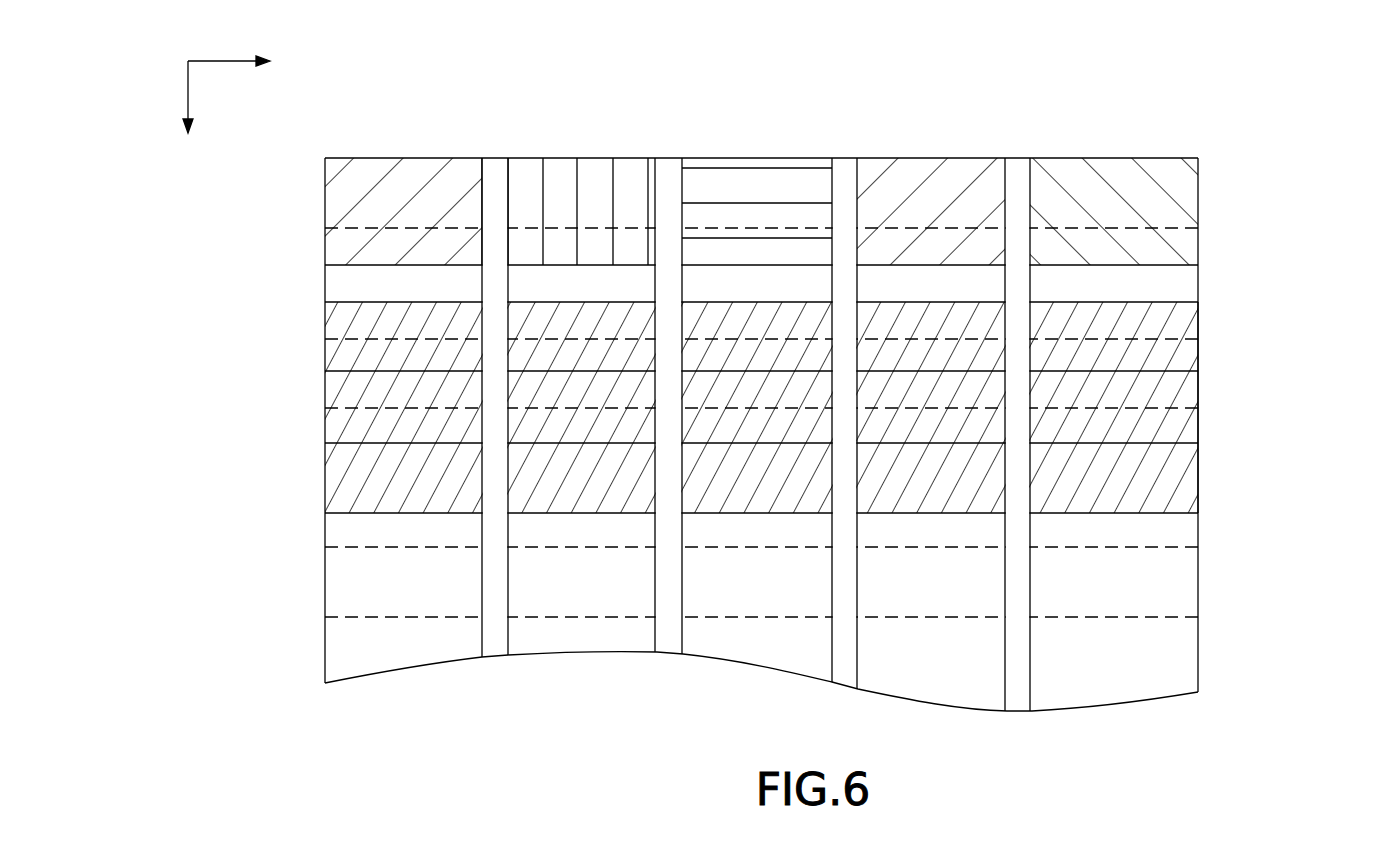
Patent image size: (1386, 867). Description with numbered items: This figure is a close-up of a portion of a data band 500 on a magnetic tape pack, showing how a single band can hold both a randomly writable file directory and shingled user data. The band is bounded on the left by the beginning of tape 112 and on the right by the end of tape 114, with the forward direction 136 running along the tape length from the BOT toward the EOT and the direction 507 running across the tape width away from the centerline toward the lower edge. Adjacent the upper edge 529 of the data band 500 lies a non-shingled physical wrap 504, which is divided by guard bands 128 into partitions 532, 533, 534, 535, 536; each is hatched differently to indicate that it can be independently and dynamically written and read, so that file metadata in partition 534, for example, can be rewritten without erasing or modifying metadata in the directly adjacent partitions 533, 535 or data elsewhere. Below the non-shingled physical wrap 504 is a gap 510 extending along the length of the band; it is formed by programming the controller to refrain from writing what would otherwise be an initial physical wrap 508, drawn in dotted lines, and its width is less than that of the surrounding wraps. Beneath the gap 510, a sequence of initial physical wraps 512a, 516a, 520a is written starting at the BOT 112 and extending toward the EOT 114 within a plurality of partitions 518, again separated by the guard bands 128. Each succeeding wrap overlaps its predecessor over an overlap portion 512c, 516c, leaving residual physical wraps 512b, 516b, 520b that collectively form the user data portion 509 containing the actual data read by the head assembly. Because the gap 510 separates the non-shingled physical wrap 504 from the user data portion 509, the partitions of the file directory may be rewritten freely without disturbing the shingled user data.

The forward direction 136 is at (226, 59).
The direction 507 is at (188, 88).
The beginning of tape (BOT) 112 is at (327, 146).
The end of tape (EOT) 114 is at (1200, 146).
The data band 500 is at (1031, 146).
The non-shingled physical wrap 504 is at (322, 160).
The upper edge 529 is at (413, 158).
The partition 532 is at (467, 180).
The partition 533 is at (626, 192).
The partition 534 is at (749, 190).
The partition 535 is at (940, 195).
The partition 536 is at (1108, 208).
The initial physical wrap 508 is at (1208, 333).
The user data portion 509 is at (1268, 298).
The gap 510 is at (336, 288).
The initial physical wrap 512a is at (323, 304).
The residual physical wrap 512b is at (1225, 297).
The overlap portion 512c is at (372, 384).
The initial physical wrap 516a is at (313, 377).
The residual physical wrap 516b is at (1208, 371).
The overlap portion 516c is at (357, 467).
The initial physical wrap 520a is at (323, 442).
The residual physical wrap 520b is at (1208, 441).
The guard bands 128 is at (497, 646).
The partitions 518 is at (718, 495).